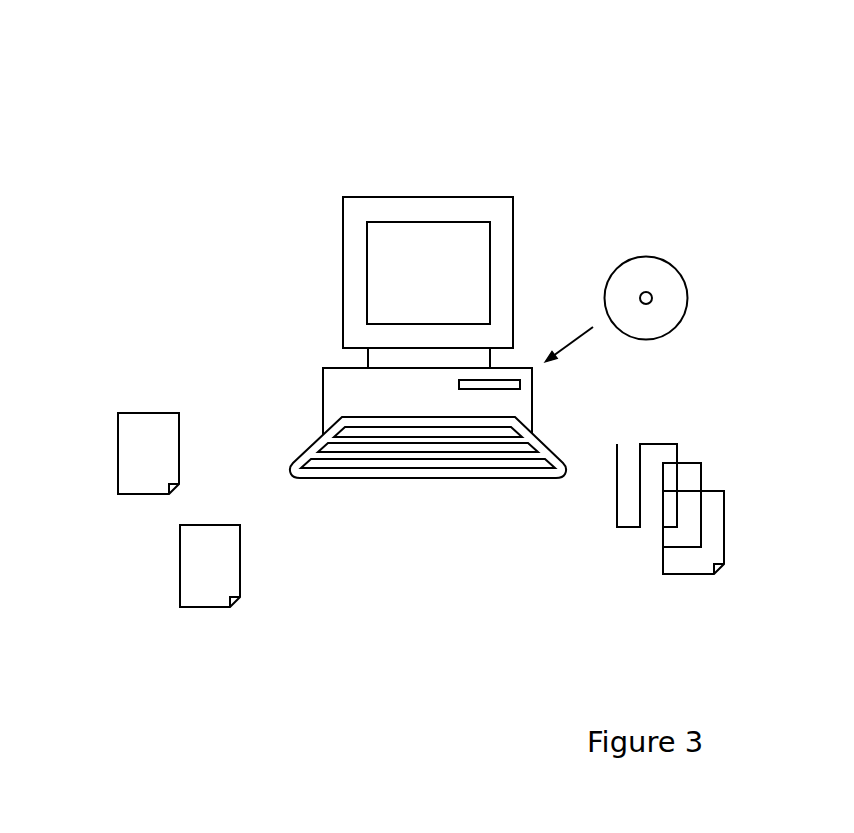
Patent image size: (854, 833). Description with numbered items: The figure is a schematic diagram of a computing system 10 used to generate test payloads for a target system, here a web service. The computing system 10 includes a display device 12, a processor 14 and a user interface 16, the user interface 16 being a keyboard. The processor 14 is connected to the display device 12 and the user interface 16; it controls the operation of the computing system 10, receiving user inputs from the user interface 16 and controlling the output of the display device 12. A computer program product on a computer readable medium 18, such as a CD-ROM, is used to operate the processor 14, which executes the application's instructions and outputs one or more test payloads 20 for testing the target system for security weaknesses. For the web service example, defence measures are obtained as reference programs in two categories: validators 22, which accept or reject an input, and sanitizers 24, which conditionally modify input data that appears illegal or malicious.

The computing system 10 is at (246, 86).
The display device 12 is at (513, 220).
The processor 14 is at (323, 385).
The user interface 16 is at (416, 480).
The computer readable medium 18 is at (688, 292).
The test payloads 20 is at (724, 517).
The validators 22 is at (118, 467).
The sanitizers 24 is at (180, 571).